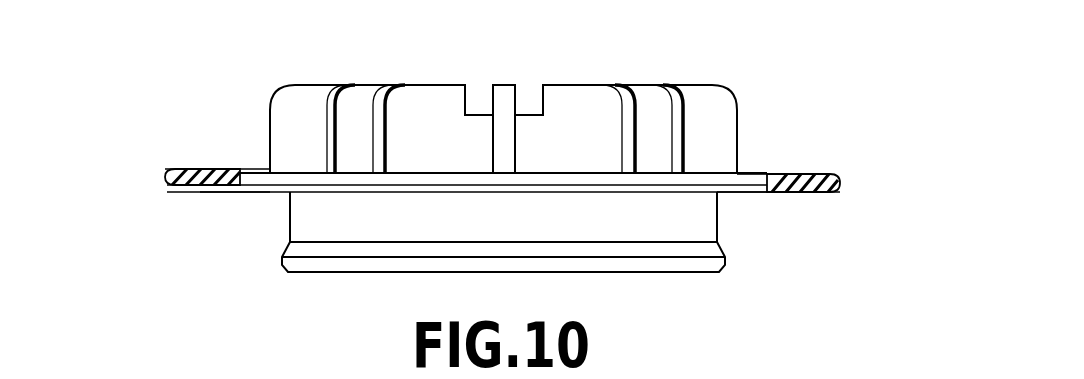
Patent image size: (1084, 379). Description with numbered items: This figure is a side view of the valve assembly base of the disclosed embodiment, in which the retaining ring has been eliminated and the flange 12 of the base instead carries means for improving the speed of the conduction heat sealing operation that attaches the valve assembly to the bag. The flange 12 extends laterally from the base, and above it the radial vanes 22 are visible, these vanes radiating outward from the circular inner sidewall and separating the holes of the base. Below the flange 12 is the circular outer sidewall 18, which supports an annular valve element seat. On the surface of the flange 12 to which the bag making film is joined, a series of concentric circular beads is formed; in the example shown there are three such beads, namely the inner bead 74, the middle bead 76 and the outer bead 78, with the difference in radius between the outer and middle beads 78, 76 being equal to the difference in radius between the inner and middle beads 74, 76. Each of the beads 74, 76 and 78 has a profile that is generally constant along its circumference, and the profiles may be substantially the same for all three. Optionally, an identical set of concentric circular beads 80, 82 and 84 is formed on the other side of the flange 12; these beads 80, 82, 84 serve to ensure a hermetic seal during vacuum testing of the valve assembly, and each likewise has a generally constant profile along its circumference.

The flange 12 is at (842, 187).
The circular outer sidewall 18 is at (290, 225).
The radial vanes 22 is at (302, 102).
The inner circular bead 74 is at (230, 170).
The middle circular bead 76 is at (207, 168).
The outer circular bead 78 is at (180, 168).
The circular bead 80 is at (229, 193).
The circular bead 82 is at (204, 193).
The circular bead 84 is at (182, 188).